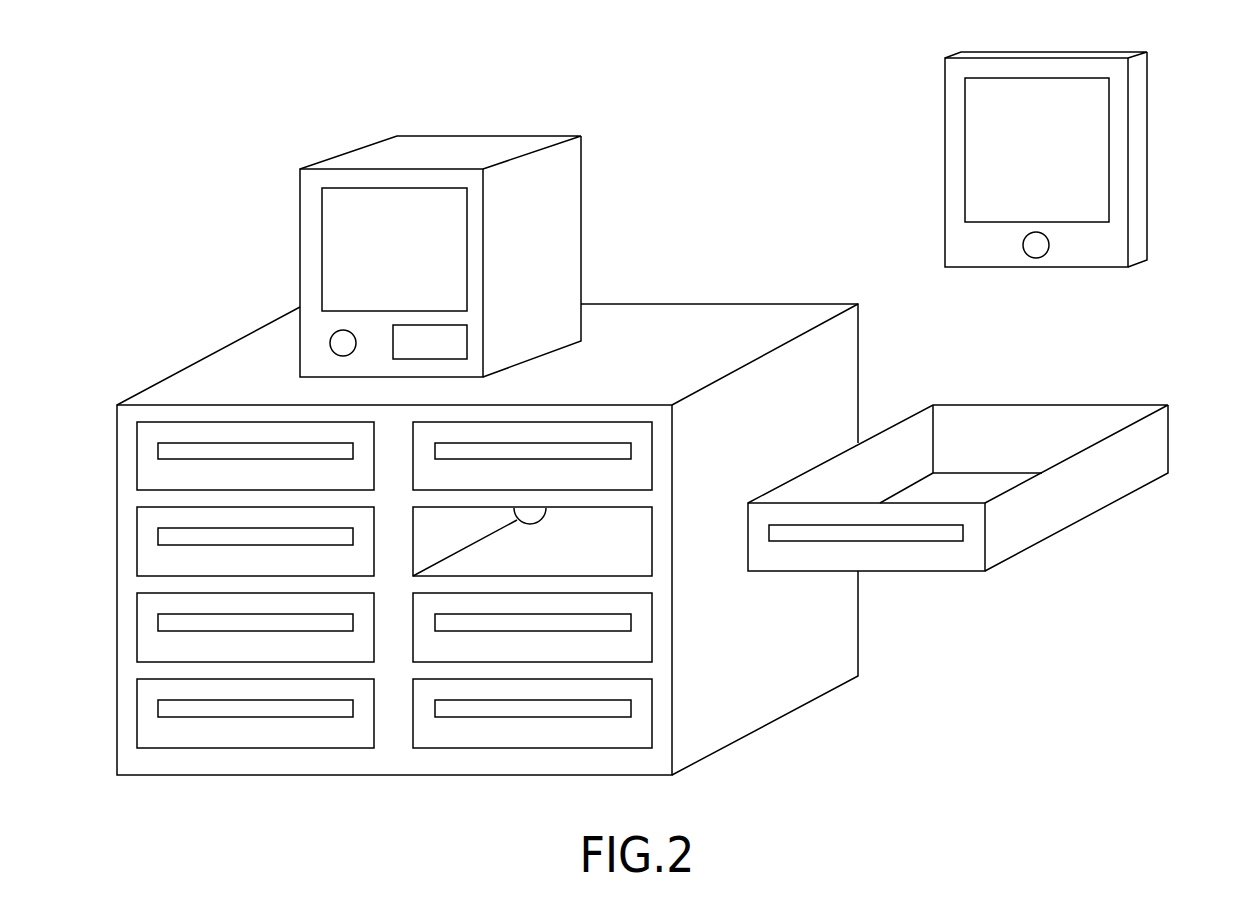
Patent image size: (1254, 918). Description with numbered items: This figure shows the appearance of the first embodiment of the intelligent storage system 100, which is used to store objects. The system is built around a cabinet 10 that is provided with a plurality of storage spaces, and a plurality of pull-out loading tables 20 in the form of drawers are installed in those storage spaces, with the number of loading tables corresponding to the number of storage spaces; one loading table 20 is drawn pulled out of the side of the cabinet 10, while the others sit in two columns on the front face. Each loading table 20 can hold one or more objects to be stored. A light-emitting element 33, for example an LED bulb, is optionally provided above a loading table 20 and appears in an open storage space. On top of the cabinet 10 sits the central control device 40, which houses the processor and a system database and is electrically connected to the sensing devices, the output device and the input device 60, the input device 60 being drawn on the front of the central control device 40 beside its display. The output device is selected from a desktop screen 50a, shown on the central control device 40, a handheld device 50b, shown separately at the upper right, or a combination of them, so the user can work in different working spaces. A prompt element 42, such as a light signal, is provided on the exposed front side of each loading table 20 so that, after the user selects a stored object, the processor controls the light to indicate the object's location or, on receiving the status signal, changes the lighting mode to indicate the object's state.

The intelligent storage system 100 is at (735, 80).
The cabinet 10 is at (768, 315).
The pull-out loading table 20 is at (635, 476).
The light-emitting element 33 is at (540, 519).
The central control device 40 is at (559, 209).
The prompt element 42 is at (585, 452).
The desktop screen 50a is at (335, 250).
The handheld device 50b is at (1085, 153).
The input device 60 is at (450, 340).